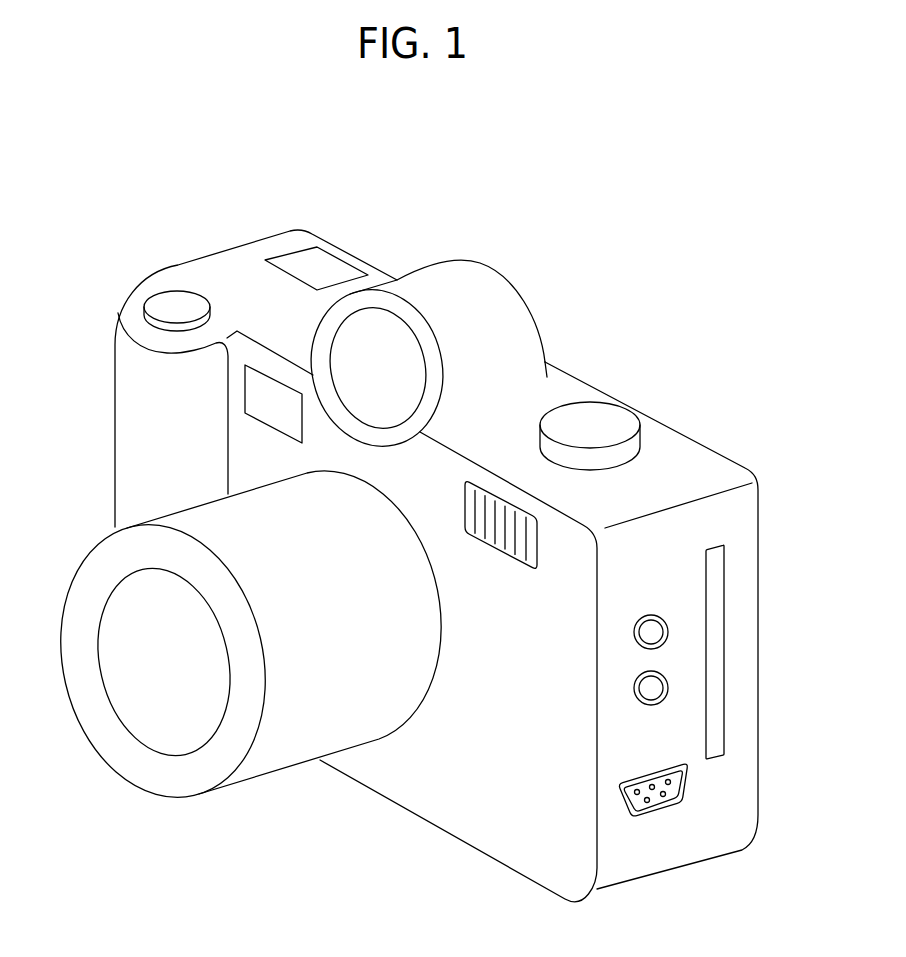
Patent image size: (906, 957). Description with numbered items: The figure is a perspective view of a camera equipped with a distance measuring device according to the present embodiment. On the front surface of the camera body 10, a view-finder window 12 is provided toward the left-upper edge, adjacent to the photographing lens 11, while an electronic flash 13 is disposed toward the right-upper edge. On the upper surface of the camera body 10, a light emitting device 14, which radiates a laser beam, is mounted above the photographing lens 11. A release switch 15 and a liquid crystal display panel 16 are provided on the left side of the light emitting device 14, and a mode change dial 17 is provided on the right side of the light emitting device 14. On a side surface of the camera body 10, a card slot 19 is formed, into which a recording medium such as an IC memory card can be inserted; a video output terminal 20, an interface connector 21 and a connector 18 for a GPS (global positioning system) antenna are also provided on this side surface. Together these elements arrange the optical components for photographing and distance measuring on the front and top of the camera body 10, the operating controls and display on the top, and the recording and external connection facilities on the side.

The camera body 10 is at (502, 823).
The photographing lens 11 is at (190, 777).
The view-finder window 12 is at (267, 400).
The electronic flash 13 is at (499, 555).
The light emitting device 14 is at (457, 284).
The release switch 15 is at (176, 308).
The liquid crystal display panel 16 is at (317, 268).
The mode change dial 17 is at (588, 426).
The connector for a GPS antenna 18 is at (652, 614).
The card slot 19 is at (717, 590).
The video output terminal 20 is at (652, 688).
The interface connector 21 is at (675, 790).